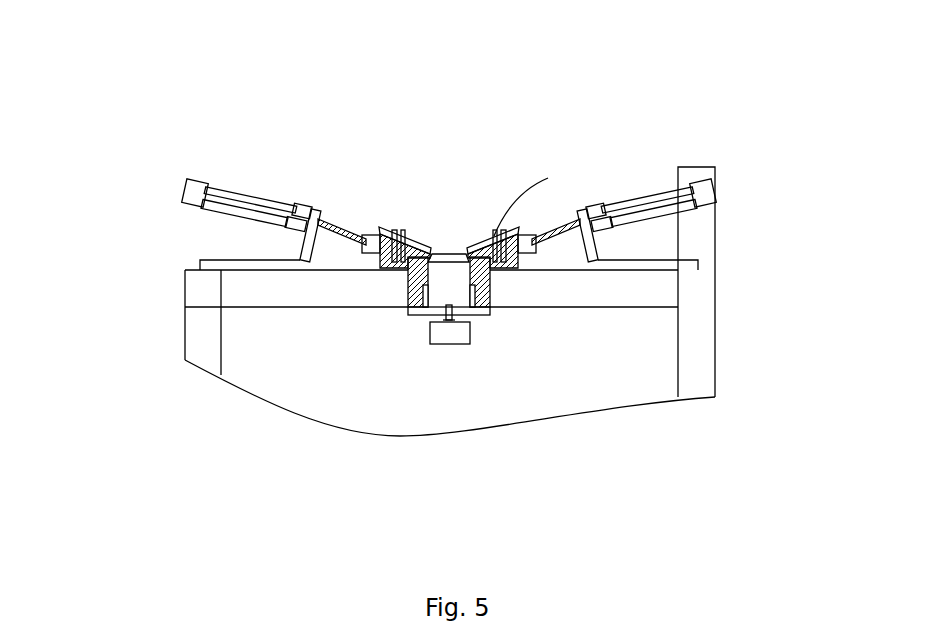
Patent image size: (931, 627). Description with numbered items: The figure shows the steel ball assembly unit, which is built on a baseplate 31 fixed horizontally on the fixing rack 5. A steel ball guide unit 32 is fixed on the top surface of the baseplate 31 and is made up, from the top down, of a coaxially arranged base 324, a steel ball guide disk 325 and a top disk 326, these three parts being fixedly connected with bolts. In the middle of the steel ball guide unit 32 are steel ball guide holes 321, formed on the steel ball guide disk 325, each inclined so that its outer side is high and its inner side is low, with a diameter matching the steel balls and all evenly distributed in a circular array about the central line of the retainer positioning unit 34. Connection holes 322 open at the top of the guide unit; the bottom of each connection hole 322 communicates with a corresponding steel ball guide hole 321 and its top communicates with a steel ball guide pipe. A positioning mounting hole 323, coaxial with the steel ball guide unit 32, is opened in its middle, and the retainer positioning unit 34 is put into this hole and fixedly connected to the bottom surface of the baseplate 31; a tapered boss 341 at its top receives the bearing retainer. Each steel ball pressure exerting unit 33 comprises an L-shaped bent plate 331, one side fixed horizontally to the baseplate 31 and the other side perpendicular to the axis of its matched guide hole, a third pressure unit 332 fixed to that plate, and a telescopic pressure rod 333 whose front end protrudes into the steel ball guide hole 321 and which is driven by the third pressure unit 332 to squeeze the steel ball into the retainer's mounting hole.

The fixing rack 5 is at (703, 349).
The baseplate 31 is at (313, 297).
The steel ball guide unit 32 is at (490, 272).
The steel ball pressure exerting unit 33 is at (311, 212).
The retainer positioning unit 34 is at (447, 320).
The steel ball guide hole 321 is at (488, 257).
The connection hole 322 is at (406, 245).
The positioning mounting hole 323 is at (417, 308).
The base 324 is at (490, 308).
The steel ball guide disk 325 is at (516, 250).
The top disk 326 is at (512, 240).
The L-shaped bent plate 331 is at (237, 266).
The third pressure unit 332 is at (208, 190).
The telescopic pressure rod 333 is at (590, 270).
The tapered boss 341 is at (446, 253).